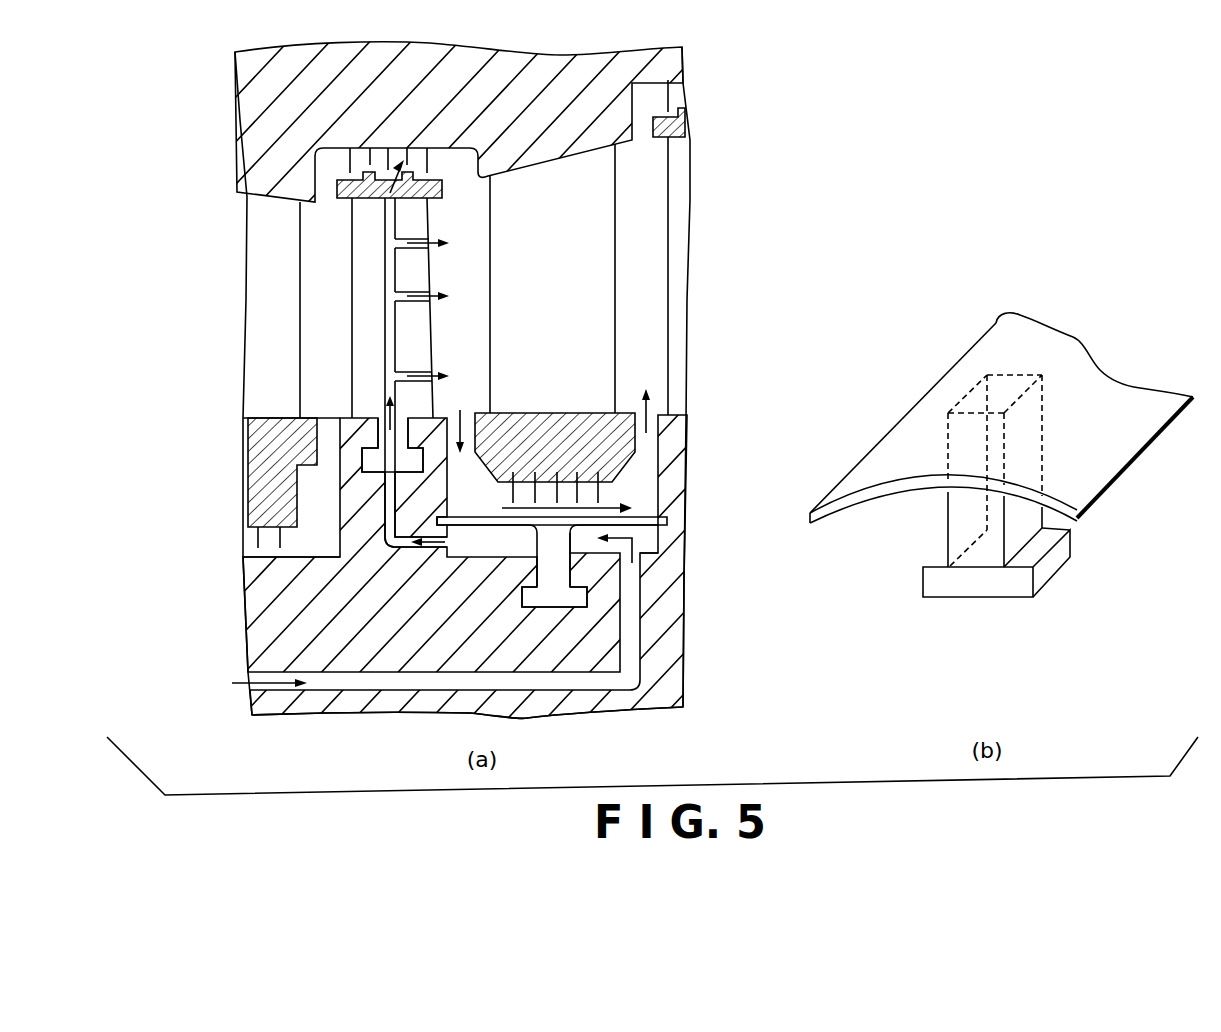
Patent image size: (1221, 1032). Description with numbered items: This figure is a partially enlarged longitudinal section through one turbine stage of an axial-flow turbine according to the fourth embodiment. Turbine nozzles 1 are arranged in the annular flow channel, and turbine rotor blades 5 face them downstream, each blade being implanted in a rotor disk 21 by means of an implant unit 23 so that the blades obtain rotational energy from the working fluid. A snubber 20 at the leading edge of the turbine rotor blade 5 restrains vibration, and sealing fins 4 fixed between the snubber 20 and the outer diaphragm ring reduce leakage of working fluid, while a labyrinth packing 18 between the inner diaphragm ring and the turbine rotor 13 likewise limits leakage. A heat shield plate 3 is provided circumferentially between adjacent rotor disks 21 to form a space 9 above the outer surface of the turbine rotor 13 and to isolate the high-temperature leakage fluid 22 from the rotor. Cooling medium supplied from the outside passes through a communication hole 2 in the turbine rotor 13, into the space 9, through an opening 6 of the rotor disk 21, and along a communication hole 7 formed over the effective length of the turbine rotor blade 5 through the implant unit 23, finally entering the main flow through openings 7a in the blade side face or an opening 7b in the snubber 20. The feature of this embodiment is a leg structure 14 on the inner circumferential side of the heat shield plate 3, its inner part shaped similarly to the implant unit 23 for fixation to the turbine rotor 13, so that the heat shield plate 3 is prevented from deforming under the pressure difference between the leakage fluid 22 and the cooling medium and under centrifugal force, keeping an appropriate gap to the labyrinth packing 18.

The turbine nozzle 1 is at (592, 262).
The communication hole 2 is at (633, 600).
The heat shield plate 3 is at (667, 519).
The sealing fins 4 is at (428, 162).
The turbine rotor blade 5 is at (362, 273).
The opening 6 is at (547, 572).
The communication hole 7 is at (388, 333).
The openings 7a is at (412, 297).
The opening 7b is at (337, 181).
The space 9 is at (658, 537).
The turbine rotor 13 is at (307, 628).
The leg structure 14 is at (522, 580).
The labyrinth packing 18 is at (597, 488).
The snubber 20 is at (442, 188).
The rotor disk 21 is at (355, 507).
The leakage fluid 22 is at (637, 497).
The implant unit 23 is at (370, 462).